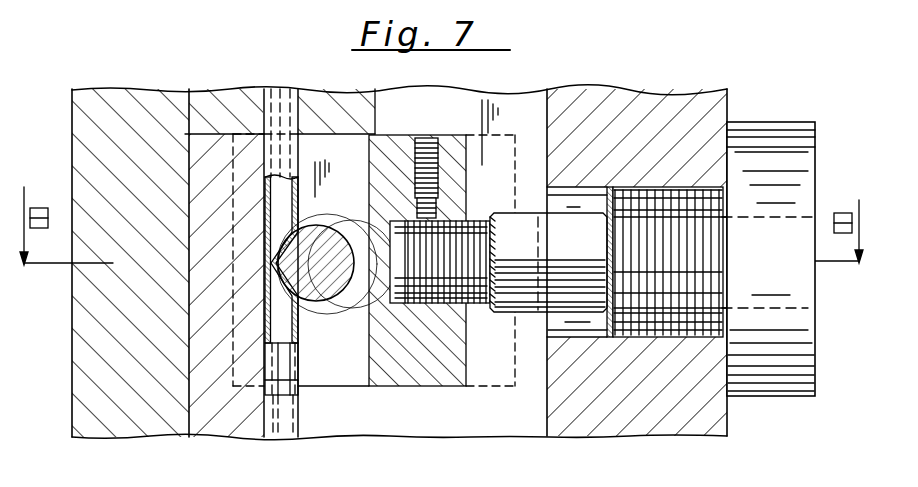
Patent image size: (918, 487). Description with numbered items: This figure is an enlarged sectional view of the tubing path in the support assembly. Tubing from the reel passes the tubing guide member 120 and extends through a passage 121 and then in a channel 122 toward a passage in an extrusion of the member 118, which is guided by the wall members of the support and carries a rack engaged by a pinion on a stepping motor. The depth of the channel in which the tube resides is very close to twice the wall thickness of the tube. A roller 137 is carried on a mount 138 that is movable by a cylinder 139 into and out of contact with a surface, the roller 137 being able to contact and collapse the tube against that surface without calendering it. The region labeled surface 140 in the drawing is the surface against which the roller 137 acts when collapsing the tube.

The housing block 118 is at (640, 108).
The base block 120 is at (128, 395).
The insert plate 121 is at (262, 100).
The plunger channel 122 is at (297, 384).
The ball 137 is at (317, 229).
The guide block 138 is at (402, 356).
The adjusting knob 139 is at (765, 147).
The spring finger 140 is at (299, 303).